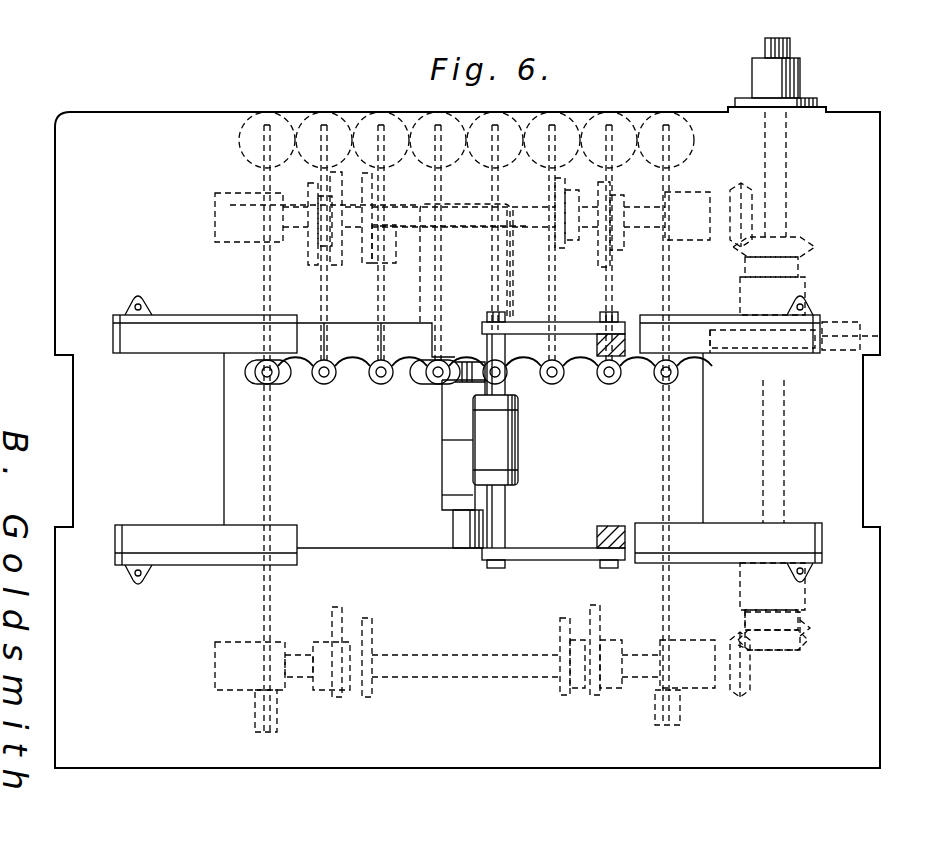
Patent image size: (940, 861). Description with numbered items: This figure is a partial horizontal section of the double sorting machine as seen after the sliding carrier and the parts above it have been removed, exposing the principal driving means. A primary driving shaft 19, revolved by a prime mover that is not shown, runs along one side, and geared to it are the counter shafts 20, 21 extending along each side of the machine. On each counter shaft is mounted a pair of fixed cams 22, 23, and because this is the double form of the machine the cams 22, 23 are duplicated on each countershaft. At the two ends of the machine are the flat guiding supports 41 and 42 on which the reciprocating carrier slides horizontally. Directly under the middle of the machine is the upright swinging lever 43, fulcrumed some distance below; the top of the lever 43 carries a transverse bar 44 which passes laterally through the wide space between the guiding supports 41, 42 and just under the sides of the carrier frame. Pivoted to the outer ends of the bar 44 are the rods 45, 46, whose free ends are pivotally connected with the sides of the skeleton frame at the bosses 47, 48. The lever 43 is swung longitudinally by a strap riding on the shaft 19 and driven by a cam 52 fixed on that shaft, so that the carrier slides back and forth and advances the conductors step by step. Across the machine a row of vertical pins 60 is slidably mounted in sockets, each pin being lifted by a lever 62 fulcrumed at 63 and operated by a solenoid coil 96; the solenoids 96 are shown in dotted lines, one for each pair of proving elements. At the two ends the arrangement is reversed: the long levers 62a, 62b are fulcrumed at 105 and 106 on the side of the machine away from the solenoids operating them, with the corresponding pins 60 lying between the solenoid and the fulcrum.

The primary driving shaft 19 is at (780, 465).
The counter shaft 20 is at (485, 235).
The counter shaft 21 is at (466, 656).
The fixed cam 22 is at (562, 622).
The fixed cam 23 is at (600, 622).
The guiding support 41 is at (172, 527).
The guiding support 42 is at (713, 528).
The swinging lever 43 is at (465, 440).
The transverse bar 44 is at (505, 525).
The rod 45 is at (545, 542).
The rod 46 is at (570, 328).
The boss 47 is at (612, 528).
The boss 48 is at (603, 358).
The cam 52 is at (888, 322).
The vertical pin 60 is at (678, 384).
The lever 62 is at (512, 318).
The long lever 62a is at (262, 622).
The long lever 62b is at (670, 622).
The fulcrum 63 is at (328, 252).
The solenoid coil 96 is at (695, 147).
The fulcrum 105 is at (280, 716).
The fulcrum 106 is at (680, 718).